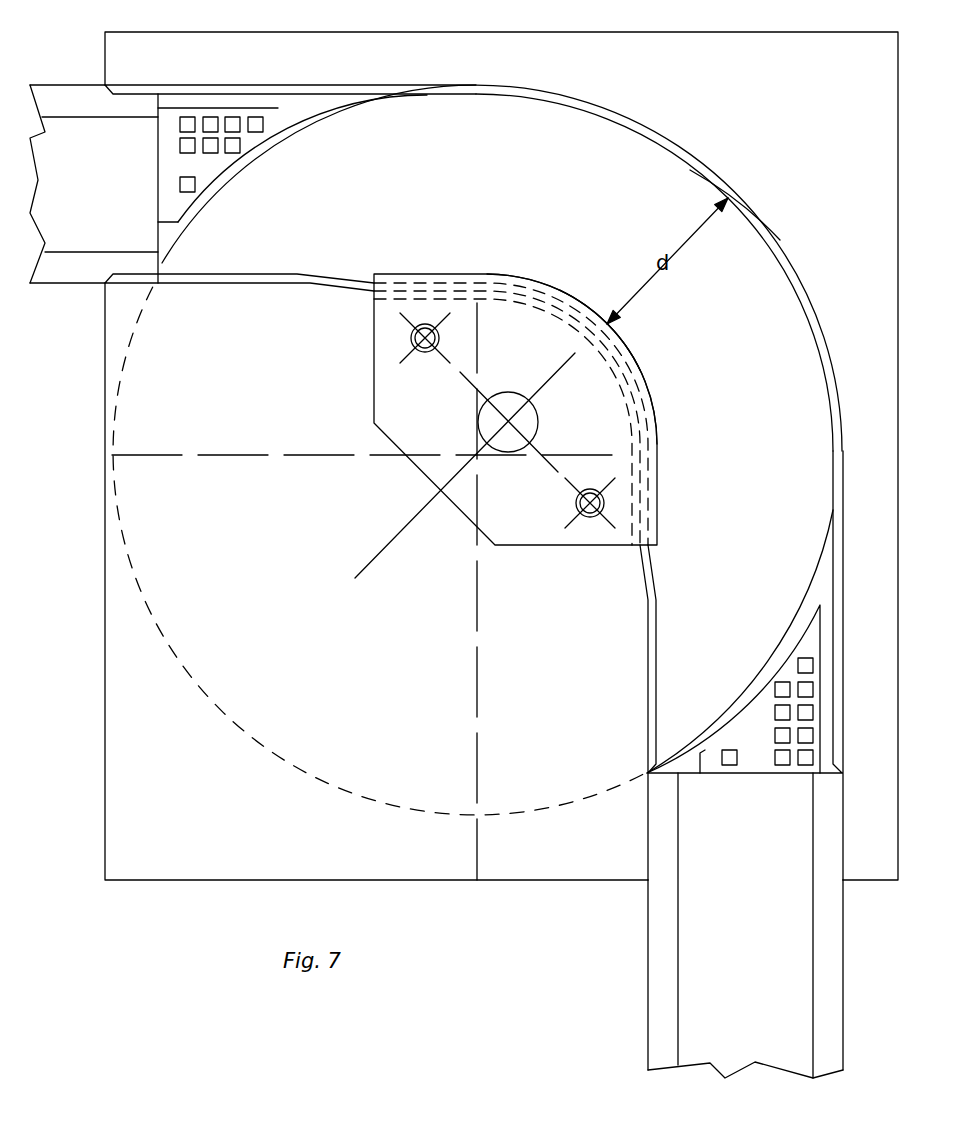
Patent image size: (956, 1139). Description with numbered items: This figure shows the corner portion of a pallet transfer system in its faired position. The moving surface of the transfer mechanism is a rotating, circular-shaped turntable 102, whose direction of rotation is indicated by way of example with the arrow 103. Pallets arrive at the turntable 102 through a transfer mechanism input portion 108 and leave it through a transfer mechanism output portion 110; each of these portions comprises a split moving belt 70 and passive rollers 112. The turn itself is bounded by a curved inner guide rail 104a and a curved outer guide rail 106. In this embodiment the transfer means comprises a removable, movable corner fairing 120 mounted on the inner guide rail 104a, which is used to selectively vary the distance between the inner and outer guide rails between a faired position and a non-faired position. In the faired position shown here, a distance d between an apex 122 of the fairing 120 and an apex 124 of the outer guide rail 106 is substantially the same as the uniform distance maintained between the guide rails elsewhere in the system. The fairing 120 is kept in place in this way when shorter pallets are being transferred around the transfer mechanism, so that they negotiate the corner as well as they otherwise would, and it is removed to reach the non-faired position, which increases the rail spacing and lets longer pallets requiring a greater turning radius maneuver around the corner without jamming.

The split moving belt 70 is at (63, 110).
The turntable 102 is at (393, 668).
The arrow 103 is at (210, 670).
The inner guide rail 104a is at (492, 306).
The outer guide rail 106 is at (805, 294).
The transfer mechanism input portion 108 is at (755, 878).
The transfer mechanism output portion 110 is at (125, 223).
The passive rollers 112 is at (207, 118).
The movable corner fairing 120 is at (485, 276).
The apex of fairing 122 is at (627, 331).
The apex of outer guide rail 124 is at (747, 183).